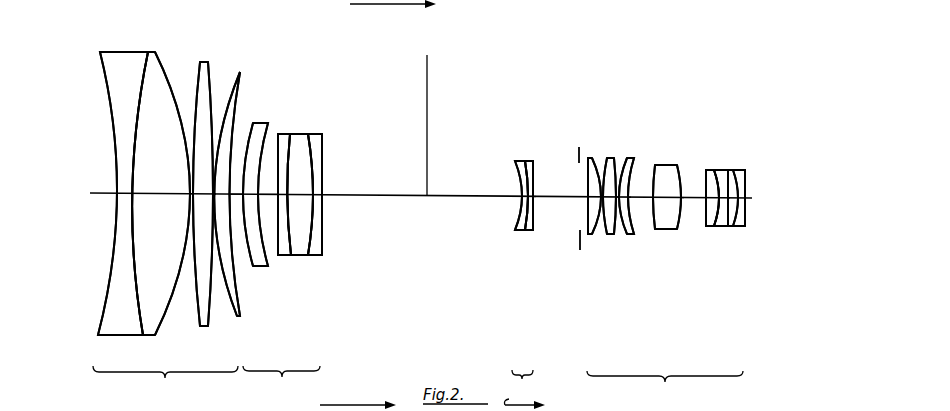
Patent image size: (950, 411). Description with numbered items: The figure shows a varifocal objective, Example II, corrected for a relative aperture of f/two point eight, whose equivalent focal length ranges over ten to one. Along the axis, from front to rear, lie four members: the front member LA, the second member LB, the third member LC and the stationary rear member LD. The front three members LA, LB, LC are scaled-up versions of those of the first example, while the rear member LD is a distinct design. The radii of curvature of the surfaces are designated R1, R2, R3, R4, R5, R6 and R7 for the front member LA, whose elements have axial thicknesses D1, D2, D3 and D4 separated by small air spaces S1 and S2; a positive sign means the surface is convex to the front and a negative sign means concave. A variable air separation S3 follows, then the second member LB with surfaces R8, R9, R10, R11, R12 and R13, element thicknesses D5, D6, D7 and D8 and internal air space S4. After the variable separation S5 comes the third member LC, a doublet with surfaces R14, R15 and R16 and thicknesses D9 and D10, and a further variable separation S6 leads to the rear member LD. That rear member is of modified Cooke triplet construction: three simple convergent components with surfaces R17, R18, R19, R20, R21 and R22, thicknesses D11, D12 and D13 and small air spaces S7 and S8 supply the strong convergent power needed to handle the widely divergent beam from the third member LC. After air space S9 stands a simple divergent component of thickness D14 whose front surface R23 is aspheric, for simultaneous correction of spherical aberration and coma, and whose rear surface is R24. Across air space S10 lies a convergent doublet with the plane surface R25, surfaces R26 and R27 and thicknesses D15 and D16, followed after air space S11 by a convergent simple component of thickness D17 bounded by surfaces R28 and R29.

The radius of curvature of first surface R1 is at (117, 172).
The radius of curvature of second surface R2 is at (135, 137).
The radius of curvature of third surface R3 is at (170, 100).
The radius of curvature of fourth surface R4 is at (195, 90).
The radius of curvature of fifth surface R5 is at (200, 84).
The radius of curvature of sixth surface R6 is at (233, 88).
The radius of curvature of seventh surface R7 is at (248, 110).
The radius of curvature of eighth surface R8 is at (270, 123).
The radius of curvature of ninth surface R9 is at (262, 150).
The radius of curvature of tenth surface R10 is at (280, 257).
The radius of curvature of eleventh surface R11 is at (308, 255).
The radius of curvature of twelfth surface R12 is at (312, 253).
The radius of curvature of thirteenth surface R13 is at (315, 252).
The radius of curvature of fourteenth surface R14 is at (513, 180).
The radius of curvature of fifteenth surface R15 is at (518, 160).
The radius of curvature of sixteenth surface R16 is at (530, 160).
The radius of curvature of seventeenth surface R17 is at (586, 173).
The radius of curvature of eighteenth surface R18 is at (604, 160).
The radius of curvature of nineteenth surface R19 is at (606, 160).
The radius of curvature of twentieth surface R20 is at (617, 157).
The radius of curvature of twenty-first surface R21 is at (623, 157).
The radius of curvature of twenty-second surface R22 is at (632, 163).
The radius of curvature of twenty-third surface R23 is at (712, 150).
The radius of curvature of twenty-fourth surface R24 is at (712, 167).
The radius of curvature of twenty-fifth surface R25 is at (708, 177).
The radius of curvature of twenty-sixth surface R26 is at (722, 170).
The radius of curvature of twenty-seventh surface R27 is at (735, 170).
The radius of curvature of twenty-eighth surface R28 is at (747, 177).
The radius of curvature of twenty-ninth surface R29 is at (747, 183).
The axial thickness of first element D1 is at (123, 194).
The axial thickness of second element D2 is at (160, 194).
The axial thickness of third element D3 is at (205, 194).
The axial thickness of fourth element D4 is at (231, 196).
The axial thickness of fifth element D5 is at (252, 194).
The axial thickness of sixth element D6 is at (318, 252).
The axial thickness of seventh element D7 is at (305, 200).
The axial thickness of eighth element D8 is at (293, 195).
The axial thickness of ninth element D9 is at (515, 197).
The axial thickness of tenth element D10 is at (527, 197).
The axial thickness of eleventh element D11 is at (590, 198).
The axial thickness of twelfth element D12 is at (610, 200).
The axial thickness of thirteenth element D13 is at (630, 200).
The axial thickness of fourteenth element D14 is at (665, 229).
The axial thickness of fifteenth element D15 is at (711, 198).
The axial thickness of sixteenth element D16 is at (722, 198).
The axial thickness of seventeenth element D17 is at (738, 198).
The axial air separation S1 is at (192, 194).
The axial air separation S2 is at (208, 194).
The variable axial air separation S3 is at (260, 125).
The axial air separation S4 is at (270, 194).
The variable axial air separation S5 is at (418, 108).
The variable axial air separation S6 is at (560, 198).
The axial air separation S7 is at (602, 200).
The axial air separation S8 is at (617, 200).
The axial air separation S9 is at (642, 203).
The axial air separation S10 is at (693, 200).
The axial air separation S11 is at (729, 198).
The front member LA is at (165, 385).
The second member LB is at (281, 386).
The third member LC is at (522, 386).
The stationary rear member LD is at (665, 391).